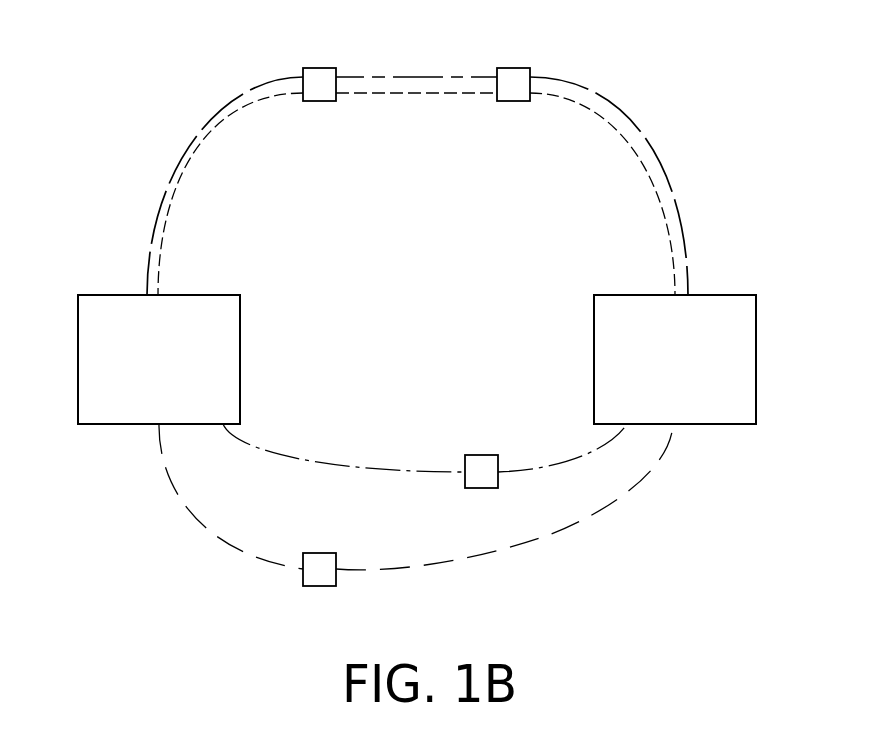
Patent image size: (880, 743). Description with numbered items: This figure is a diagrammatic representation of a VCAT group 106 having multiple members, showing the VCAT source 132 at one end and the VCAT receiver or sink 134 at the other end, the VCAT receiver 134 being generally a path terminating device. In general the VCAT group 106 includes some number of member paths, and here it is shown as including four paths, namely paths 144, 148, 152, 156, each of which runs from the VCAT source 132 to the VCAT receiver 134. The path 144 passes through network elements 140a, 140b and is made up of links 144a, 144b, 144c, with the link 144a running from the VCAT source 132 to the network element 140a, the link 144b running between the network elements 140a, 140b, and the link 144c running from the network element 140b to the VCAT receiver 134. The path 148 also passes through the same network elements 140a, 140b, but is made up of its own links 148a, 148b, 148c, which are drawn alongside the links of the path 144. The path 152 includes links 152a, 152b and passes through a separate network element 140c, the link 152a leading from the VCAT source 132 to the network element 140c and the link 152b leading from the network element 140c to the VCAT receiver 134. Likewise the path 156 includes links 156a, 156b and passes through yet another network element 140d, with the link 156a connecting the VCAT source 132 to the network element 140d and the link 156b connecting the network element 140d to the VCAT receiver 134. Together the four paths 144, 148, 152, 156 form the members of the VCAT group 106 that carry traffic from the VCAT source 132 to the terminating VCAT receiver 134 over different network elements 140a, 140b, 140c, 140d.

The VCAT group 106 is at (681, 114).
The VCAT source 132 is at (240, 358).
The VCAT receiver or sink 134 is at (594, 358).
The network element 140a is at (320, 68).
The network element 140b is at (512, 68).
The network element 140c is at (478, 488).
The network element 140d is at (320, 586).
The path 144 is at (186, 131).
The link 144a is at (160, 201).
The link 144b is at (409, 77).
The link 144c is at (676, 207).
The path 148 is at (177, 220).
The link 148a is at (203, 147).
The link 148b is at (453, 95).
The link 148c is at (602, 120).
The path 152 is at (318, 445).
The link 152a is at (363, 470).
The link 152b is at (547, 470).
The path 156 is at (210, 515).
The link 156a is at (230, 547).
The link 156b is at (530, 540).